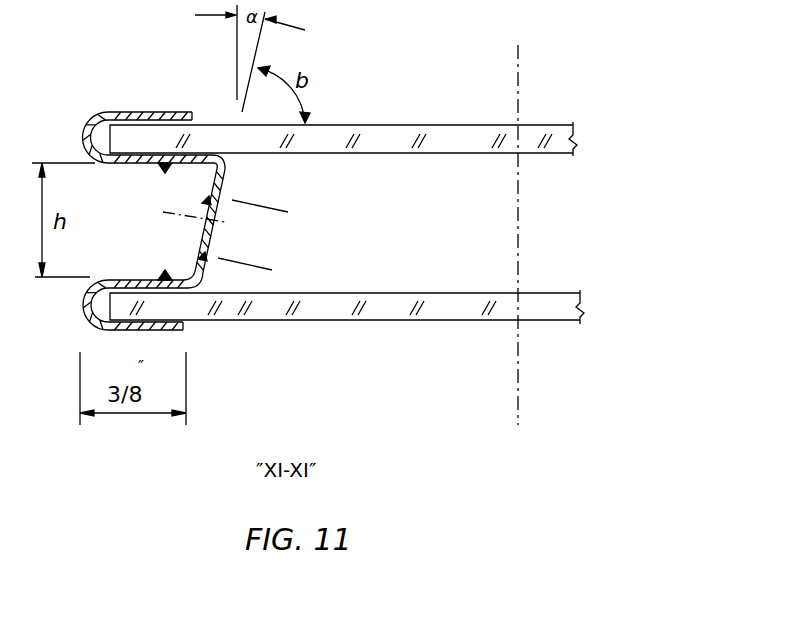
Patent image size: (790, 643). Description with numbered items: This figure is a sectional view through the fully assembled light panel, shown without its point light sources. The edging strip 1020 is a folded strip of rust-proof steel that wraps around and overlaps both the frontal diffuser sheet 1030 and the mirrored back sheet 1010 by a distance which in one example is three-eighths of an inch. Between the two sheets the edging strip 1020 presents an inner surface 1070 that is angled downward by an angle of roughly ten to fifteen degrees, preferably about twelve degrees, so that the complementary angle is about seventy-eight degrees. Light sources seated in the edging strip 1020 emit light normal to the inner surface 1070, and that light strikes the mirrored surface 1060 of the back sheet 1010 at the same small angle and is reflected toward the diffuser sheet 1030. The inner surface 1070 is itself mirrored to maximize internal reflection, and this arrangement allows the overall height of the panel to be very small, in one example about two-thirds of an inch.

The mirrored back sheet 1010 is at (530, 305).
The edging strip 1020 is at (151, 111).
The frontal diffuser sheet 1030 is at (383, 125).
The mirrored surface 1060 is at (380, 282).
The inner surface 1070 is at (228, 172).